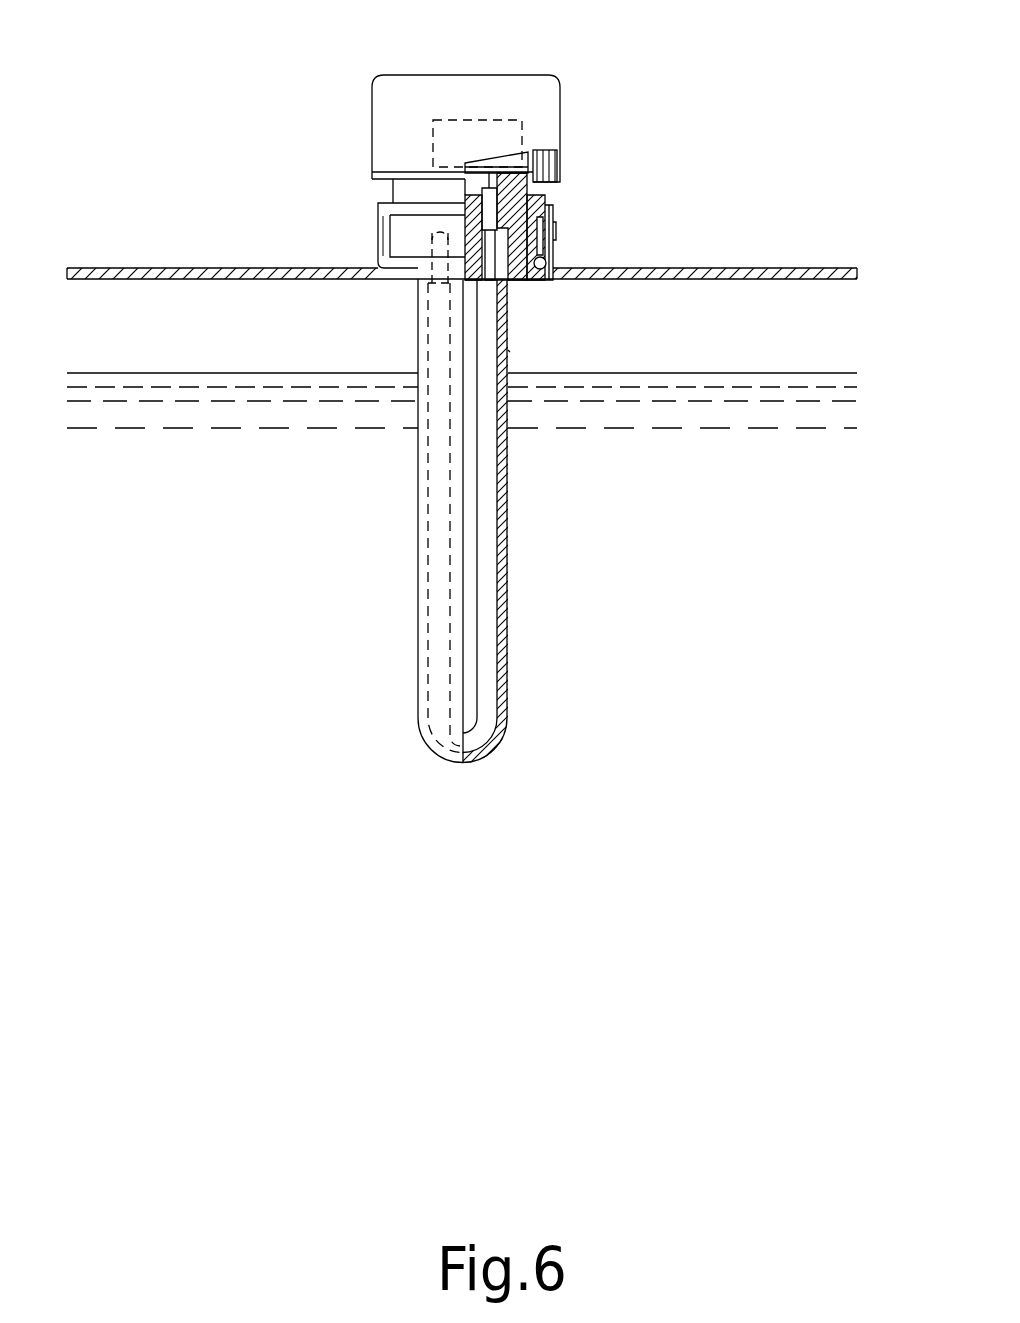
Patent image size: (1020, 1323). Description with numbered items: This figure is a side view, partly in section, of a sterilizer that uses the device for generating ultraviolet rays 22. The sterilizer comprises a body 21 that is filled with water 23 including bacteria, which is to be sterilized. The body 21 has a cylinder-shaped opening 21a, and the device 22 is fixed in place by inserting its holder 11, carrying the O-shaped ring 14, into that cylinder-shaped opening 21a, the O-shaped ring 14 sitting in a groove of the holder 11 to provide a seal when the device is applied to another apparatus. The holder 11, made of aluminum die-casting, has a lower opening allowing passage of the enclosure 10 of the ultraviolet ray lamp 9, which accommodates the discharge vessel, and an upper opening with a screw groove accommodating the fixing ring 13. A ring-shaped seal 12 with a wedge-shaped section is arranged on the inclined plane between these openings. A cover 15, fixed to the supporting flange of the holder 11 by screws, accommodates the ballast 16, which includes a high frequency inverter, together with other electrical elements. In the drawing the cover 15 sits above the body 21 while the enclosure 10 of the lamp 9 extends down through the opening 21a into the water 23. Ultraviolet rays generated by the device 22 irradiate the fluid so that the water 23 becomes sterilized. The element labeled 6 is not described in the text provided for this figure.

The lead wire terminal 6 is at (470, 196).
The ultraviolet ray lamp 9 is at (492, 503).
The enclosure 10 is at (505, 603).
The holder 11 is at (553, 203).
The ring-shaped seal 12 is at (553, 228).
The fixing ring 13 is at (543, 192).
The O-shaped ring 14 is at (552, 260).
The cover 15 is at (372, 118).
The ballast 16 is at (465, 120).
The body 21 is at (700, 270).
The cylinder-shaped opening 21a is at (378, 237).
The device for generating ultraviolet rays 22 is at (510, 352).
The water 23 is at (778, 375).